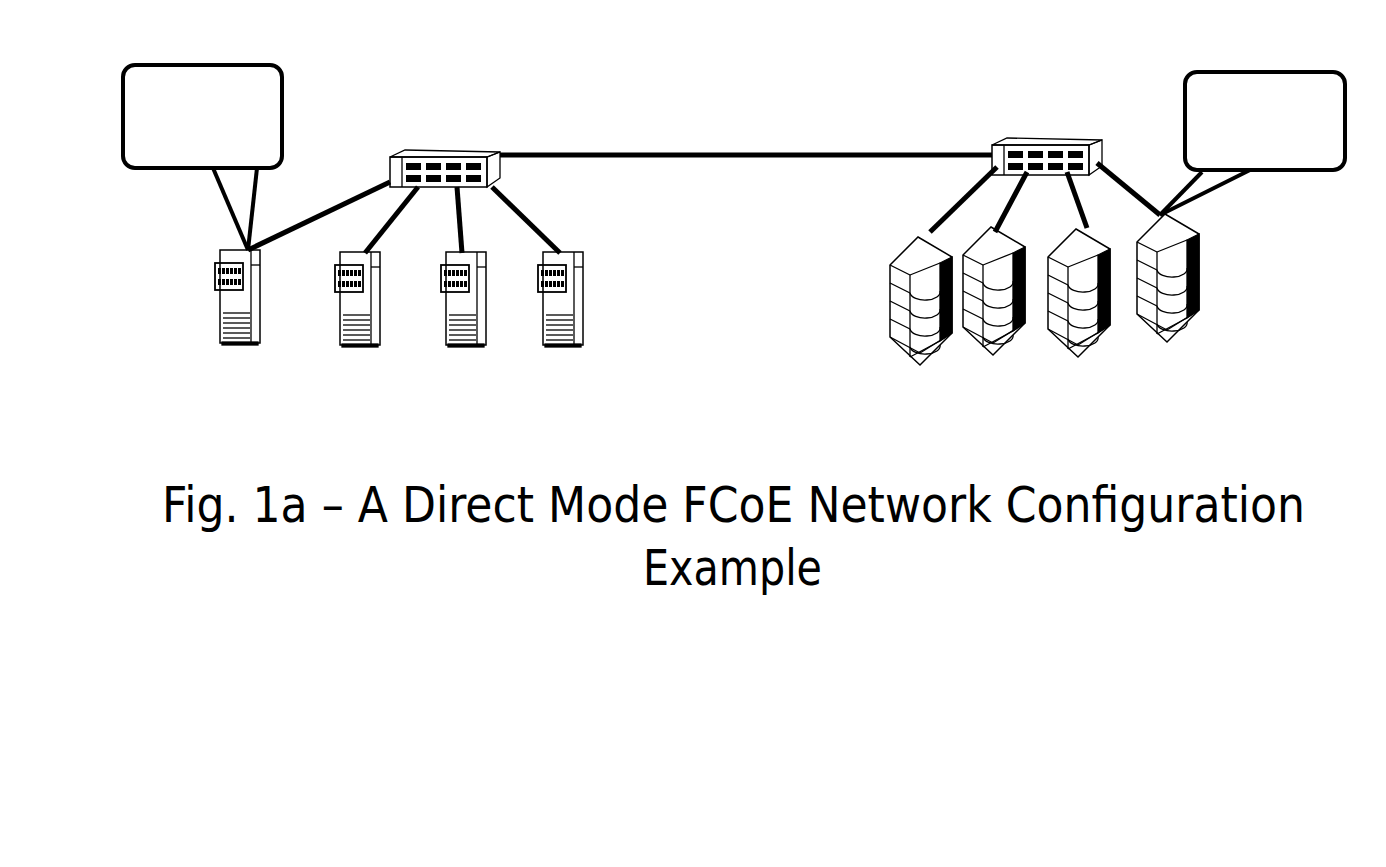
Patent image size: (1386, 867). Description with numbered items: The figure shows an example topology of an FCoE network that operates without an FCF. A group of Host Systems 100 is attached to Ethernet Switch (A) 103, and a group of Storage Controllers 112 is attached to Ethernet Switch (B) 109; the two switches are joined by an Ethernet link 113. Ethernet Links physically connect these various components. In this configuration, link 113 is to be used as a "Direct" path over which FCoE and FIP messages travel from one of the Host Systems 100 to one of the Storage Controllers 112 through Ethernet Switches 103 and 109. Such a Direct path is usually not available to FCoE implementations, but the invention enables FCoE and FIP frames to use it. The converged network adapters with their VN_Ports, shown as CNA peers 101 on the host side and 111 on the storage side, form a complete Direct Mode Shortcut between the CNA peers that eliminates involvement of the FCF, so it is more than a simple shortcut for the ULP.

The Host Systems 100 is at (540, 352).
The CNA peer (X) 101 is at (248, 252).
The Ethernet Switch (A) 103 is at (475, 150).
The Ethernet Switch (B) 109 is at (1013, 150).
The CNA peer (Y) 111 is at (1160, 215).
The Storage Controllers 112 is at (953, 345).
The link 113 is at (762, 155).